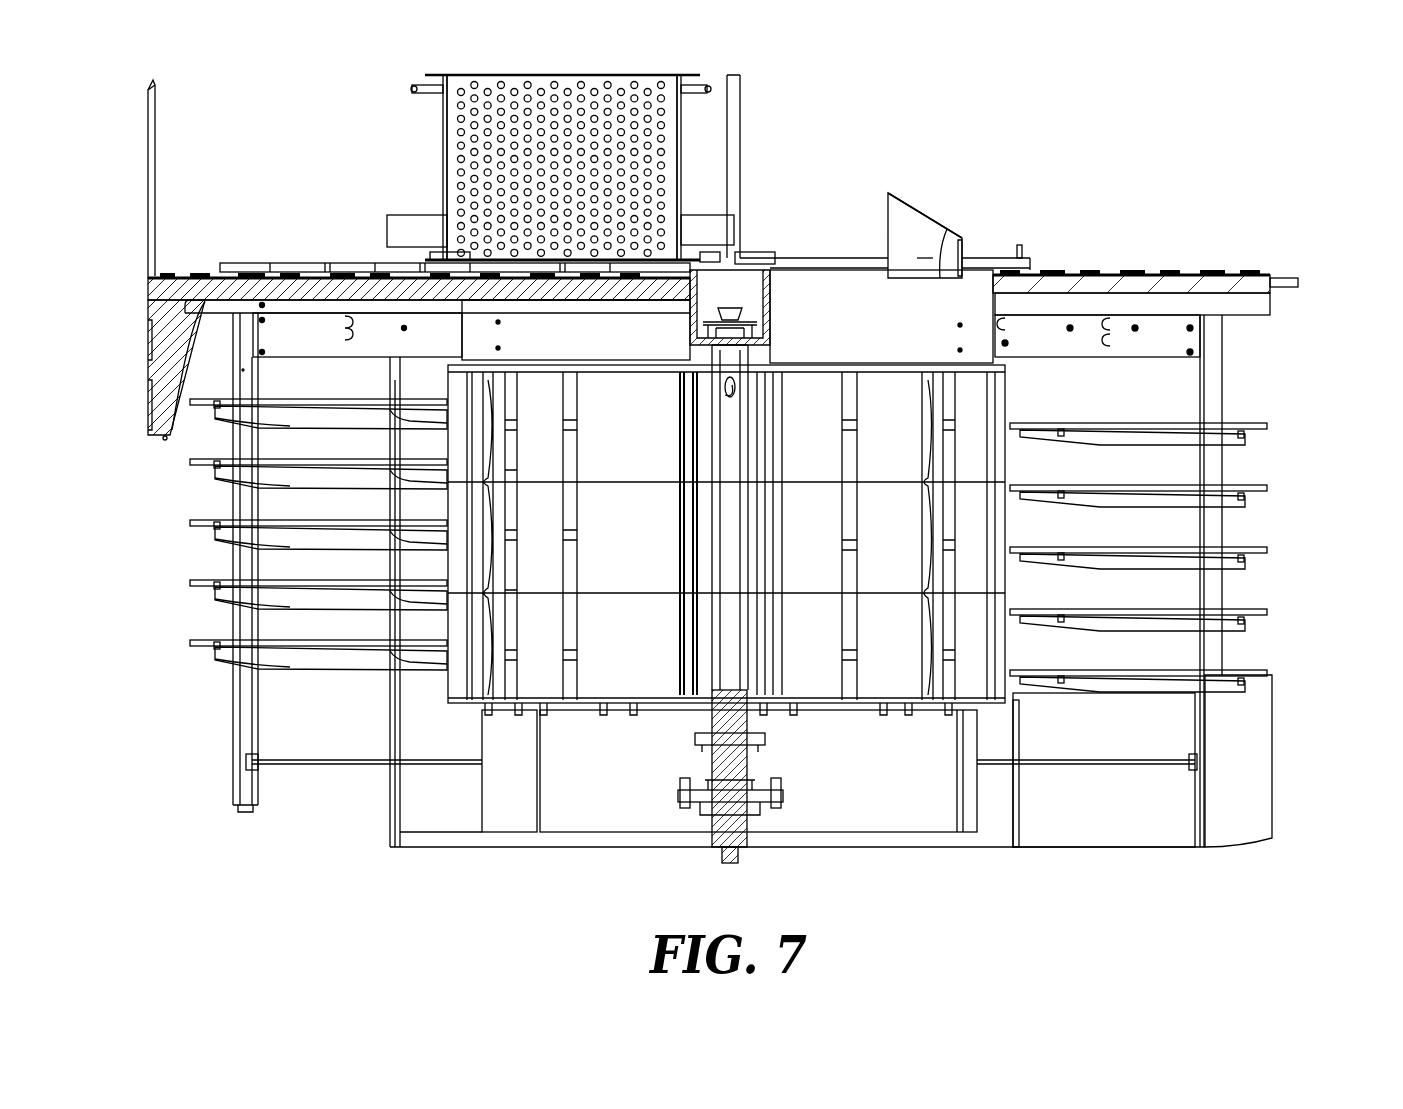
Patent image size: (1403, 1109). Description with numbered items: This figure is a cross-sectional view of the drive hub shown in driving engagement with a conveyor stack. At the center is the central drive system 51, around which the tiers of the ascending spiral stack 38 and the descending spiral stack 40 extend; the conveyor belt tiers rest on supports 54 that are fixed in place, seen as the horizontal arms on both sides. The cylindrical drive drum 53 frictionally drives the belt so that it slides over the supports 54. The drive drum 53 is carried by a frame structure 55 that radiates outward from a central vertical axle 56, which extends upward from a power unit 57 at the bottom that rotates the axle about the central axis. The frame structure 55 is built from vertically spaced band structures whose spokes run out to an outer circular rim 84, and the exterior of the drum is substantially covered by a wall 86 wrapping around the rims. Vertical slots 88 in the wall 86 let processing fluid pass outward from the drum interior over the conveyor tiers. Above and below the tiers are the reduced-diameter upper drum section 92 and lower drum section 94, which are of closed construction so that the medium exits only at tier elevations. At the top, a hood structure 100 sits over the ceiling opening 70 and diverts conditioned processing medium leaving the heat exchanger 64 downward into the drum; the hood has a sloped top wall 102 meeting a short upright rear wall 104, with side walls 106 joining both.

The ascending spiral stack 38 is at (1176, 527).
The descending spiral stack 40 is at (1097, 581).
The central drive system 51 is at (780, 810).
The drive drum 53 is at (833, 712).
The supports 54 is at (228, 526).
The frame structure 55 is at (830, 418).
The central vertical axle 56 is at (718, 655).
The power unit 57 is at (690, 812).
The heat exchanger 64 is at (460, 140).
The opening 70 is at (942, 270).
The outer circular rim 84 is at (915, 595).
The wall 86 is at (622, 622).
The vertical slots 88 is at (858, 648).
The upper drum section 92 is at (465, 328).
The lower drum section 94 is at (805, 760).
The hood structure 100 is at (939, 205).
The sloped top wall 102 is at (920, 210).
The rear wall 104 is at (968, 255).
The side walls 106 is at (910, 237).